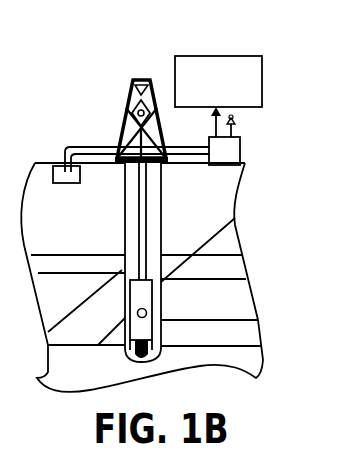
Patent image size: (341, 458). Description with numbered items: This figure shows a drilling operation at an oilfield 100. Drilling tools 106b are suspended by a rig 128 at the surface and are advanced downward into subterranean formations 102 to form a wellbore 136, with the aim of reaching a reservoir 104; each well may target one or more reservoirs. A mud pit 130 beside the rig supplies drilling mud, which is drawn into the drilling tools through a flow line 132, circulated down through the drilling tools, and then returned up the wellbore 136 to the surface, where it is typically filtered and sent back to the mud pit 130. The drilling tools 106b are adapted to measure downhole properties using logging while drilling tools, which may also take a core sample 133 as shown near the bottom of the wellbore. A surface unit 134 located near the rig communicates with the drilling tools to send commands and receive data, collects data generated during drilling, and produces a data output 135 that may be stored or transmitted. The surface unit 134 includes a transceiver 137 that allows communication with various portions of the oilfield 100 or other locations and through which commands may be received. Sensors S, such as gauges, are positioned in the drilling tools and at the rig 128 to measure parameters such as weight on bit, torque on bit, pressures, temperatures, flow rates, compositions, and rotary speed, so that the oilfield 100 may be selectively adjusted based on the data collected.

The oilfield 100 is at (77, 79).
The subterranean formations 102 is at (172, 258).
The reservoir 104 is at (203, 310).
The drilling tools 106b is at (128, 310).
The rig 128 is at (128, 118).
The mud pit 130 is at (66, 186).
The flow line 132 is at (62, 163).
The core sample 133 is at (129, 355).
The surface unit 134 is at (241, 153).
The data output 135 is at (216, 56).
The wellbore 136 is at (158, 184).
The transceiver 137 is at (238, 130).
The sensor S is at (147, 311).